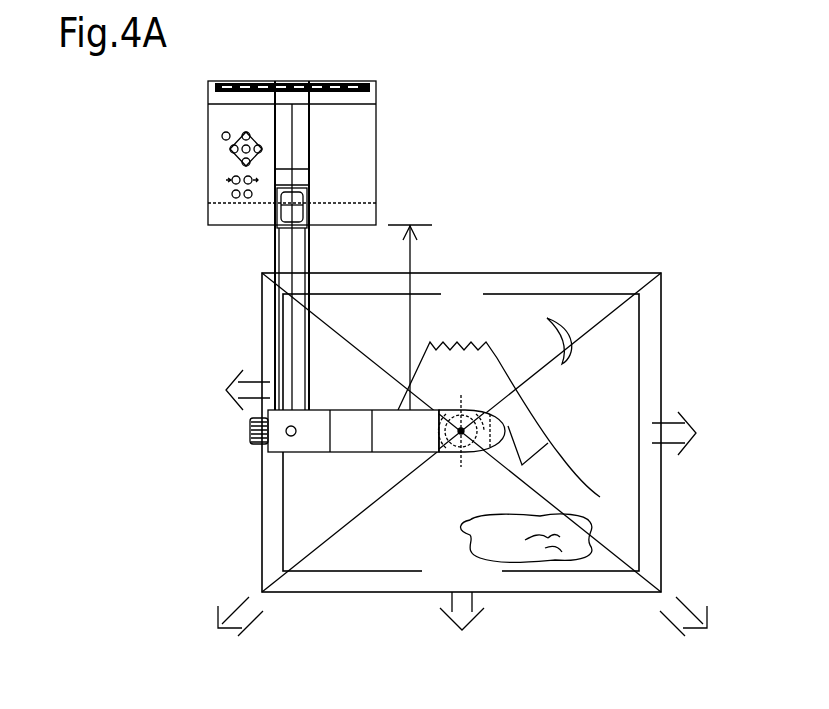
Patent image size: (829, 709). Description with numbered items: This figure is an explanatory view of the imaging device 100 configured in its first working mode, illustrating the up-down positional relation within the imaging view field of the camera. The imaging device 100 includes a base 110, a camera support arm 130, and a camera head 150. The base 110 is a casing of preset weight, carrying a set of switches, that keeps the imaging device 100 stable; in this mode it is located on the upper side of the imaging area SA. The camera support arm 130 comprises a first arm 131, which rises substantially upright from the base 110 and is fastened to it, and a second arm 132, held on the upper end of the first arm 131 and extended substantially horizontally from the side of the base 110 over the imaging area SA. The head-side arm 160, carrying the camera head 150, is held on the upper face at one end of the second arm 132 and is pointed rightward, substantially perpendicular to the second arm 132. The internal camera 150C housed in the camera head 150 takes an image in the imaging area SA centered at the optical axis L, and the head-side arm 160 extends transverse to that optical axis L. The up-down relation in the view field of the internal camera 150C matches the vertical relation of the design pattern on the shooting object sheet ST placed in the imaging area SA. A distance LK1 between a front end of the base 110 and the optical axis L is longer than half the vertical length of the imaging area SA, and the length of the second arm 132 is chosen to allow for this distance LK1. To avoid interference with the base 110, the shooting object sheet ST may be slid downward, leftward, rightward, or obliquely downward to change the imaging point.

The imaging device 100 is at (486, 214).
The base 110 is at (354, 116).
The camera support arm 130 is at (160, 233).
The first arm 131 is at (270, 196).
The second arm 132 is at (273, 247).
The camera head 150 is at (477, 440).
The internal camera 150C is at (458, 454).
The head-side arm 160 is at (298, 454).
The distance LK1 is at (412, 258).
The shooting object sheet ST is at (632, 322).
The imaging area SA is at (648, 500).
The optical axis L is at (459, 418).